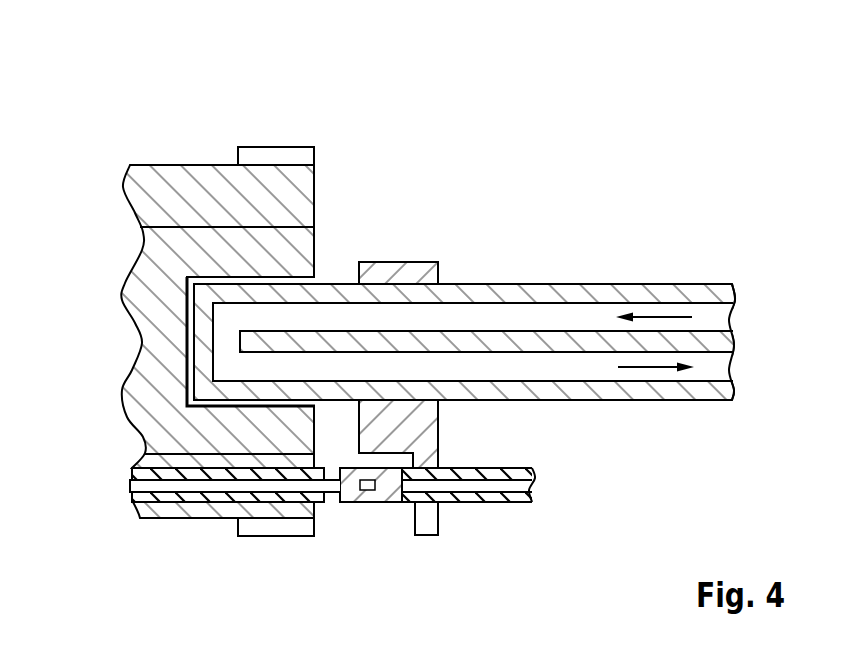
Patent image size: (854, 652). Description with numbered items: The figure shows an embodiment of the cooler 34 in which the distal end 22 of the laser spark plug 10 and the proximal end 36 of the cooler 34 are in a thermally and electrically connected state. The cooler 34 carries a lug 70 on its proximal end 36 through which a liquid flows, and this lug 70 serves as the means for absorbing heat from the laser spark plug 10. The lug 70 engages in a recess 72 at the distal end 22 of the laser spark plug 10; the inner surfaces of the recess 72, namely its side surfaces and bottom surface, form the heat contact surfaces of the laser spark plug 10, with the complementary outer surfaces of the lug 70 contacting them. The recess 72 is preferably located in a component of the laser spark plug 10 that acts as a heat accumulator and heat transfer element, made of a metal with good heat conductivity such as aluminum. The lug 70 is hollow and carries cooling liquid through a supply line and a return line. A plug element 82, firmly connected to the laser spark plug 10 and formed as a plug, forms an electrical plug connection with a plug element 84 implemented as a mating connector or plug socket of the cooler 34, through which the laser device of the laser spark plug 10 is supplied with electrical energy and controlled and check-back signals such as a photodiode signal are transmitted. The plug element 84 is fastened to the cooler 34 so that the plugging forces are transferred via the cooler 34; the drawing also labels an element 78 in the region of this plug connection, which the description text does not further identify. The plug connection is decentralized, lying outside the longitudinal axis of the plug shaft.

The laser spark plug 10 is at (400, 310).
The distal end 22 is at (327, 243).
The cooler 34 is at (504, 174).
The proximal end 36 is at (320, 554).
The lug 70 is at (562, 283).
The recess 72 is at (187, 344).
The printed circuit board 78 is at (477, 503).
The plug element 82 is at (332, 487).
The plug element 84 is at (380, 503).